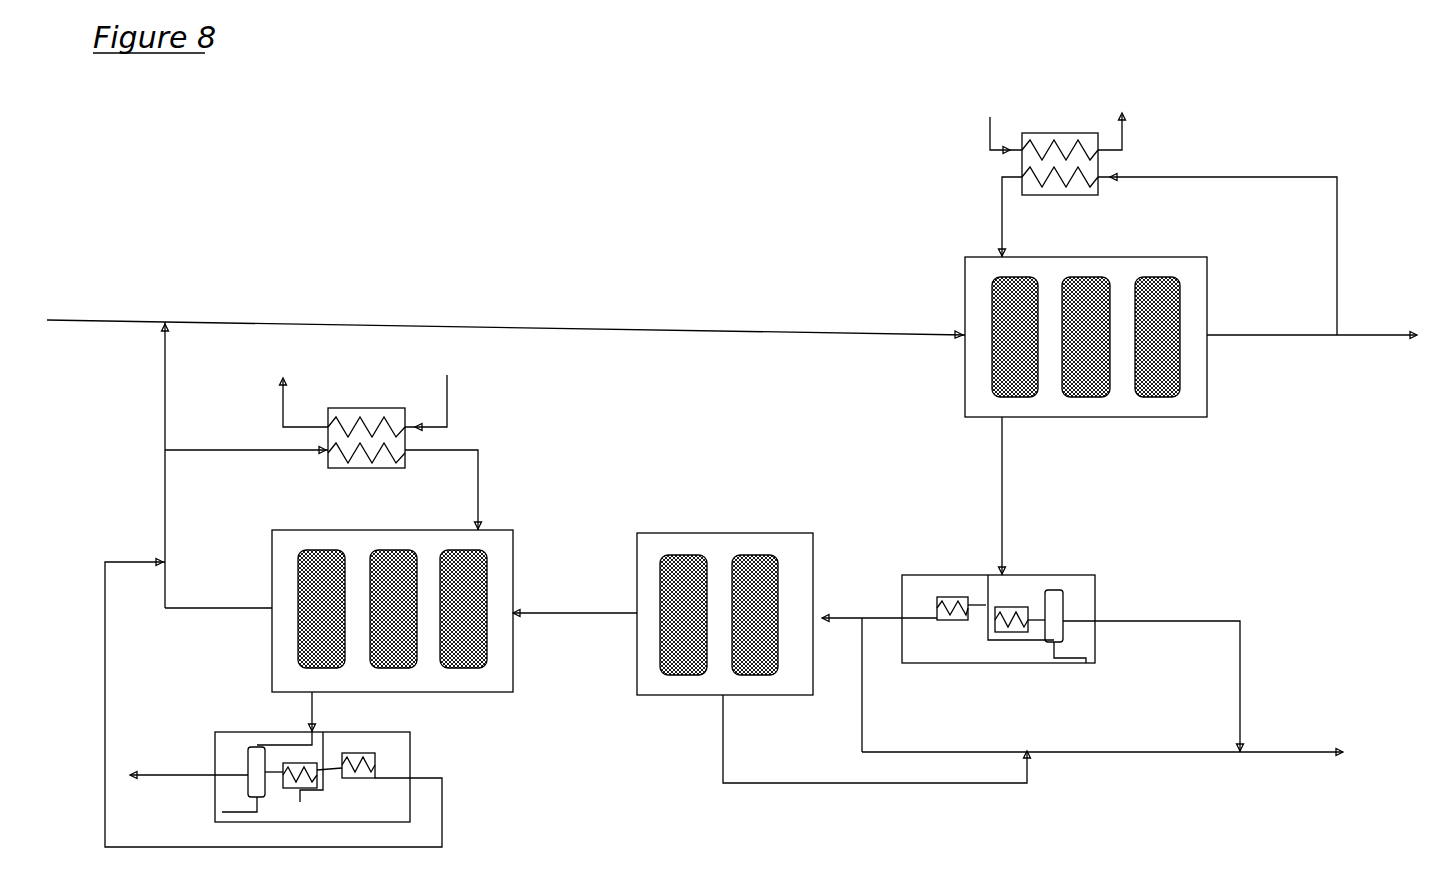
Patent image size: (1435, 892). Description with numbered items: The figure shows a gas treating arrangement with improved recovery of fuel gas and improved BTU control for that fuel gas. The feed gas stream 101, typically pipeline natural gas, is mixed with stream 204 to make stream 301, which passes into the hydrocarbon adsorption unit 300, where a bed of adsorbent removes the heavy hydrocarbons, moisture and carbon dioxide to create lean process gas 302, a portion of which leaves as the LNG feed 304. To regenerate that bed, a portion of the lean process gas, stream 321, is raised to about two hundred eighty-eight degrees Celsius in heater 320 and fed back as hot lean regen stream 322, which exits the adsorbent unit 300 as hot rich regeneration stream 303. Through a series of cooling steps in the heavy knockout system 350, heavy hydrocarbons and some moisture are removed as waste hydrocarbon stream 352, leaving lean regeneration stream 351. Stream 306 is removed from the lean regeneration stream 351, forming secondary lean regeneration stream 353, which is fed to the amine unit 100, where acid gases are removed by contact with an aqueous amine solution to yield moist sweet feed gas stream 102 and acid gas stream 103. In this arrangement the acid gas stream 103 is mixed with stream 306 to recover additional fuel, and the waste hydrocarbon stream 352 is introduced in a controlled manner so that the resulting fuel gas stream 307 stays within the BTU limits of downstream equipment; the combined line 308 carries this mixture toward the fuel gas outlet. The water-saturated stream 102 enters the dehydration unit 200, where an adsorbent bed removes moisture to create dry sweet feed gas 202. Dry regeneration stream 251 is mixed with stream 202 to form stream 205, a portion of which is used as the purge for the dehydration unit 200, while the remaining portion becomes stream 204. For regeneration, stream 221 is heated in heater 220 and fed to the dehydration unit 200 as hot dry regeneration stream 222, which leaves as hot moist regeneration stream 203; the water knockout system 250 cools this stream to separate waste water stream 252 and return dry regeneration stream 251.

The amine unit 100 is at (725, 614).
The feed gas stream 101 is at (106, 307).
The moist sweet feed gas stream 102 is at (575, 601).
The acid gas stream 103 is at (858, 739).
The dehydration unit 200 is at (392, 611).
The dry sweet feed gas 202 is at (218, 594).
The hot moist regeneration stream 203 is at (332, 712).
The remaining portion of stream 202 204 is at (146, 386).
The mixed stream 205 is at (141, 529).
The heater 220 is at (364, 421).
The portion of stream 202 for regeneration 221 is at (246, 438).
The hot dry regeneration stream 222 is at (443, 490).
The water knockout system 250 is at (312, 776).
The dry regeneration stream 251 is at (297, 703).
The waste water stream 252 is at (189, 785).
The hydrocarbon adsorption unit 300 is at (1086, 336).
The adsorbent unit inlet stream 301 is at (565, 319).
The lean process gas 302 is at (1272, 322).
The hot rich regeneration stream 303 is at (977, 496).
The LNG feed 304 is at (1377, 324).
The removed portion of lean regeneration stream 306 is at (944, 737).
The fuel gas stream 307 is at (1291, 743).
The combined bottoms stream 308 is at (1133, 737).
The heater 320 is at (1058, 152).
The portion of stream 302 for regeneration 321 is at (1217, 244).
The hot lean regen stream 322 is at (991, 217).
The heavy knockout system 350 is at (998, 618).
The lean regeneration stream 351 is at (879, 606).
The waste hydrocarbon stream 352 is at (1153, 685).
The secondary lean regeneration stream 353 is at (842, 685).